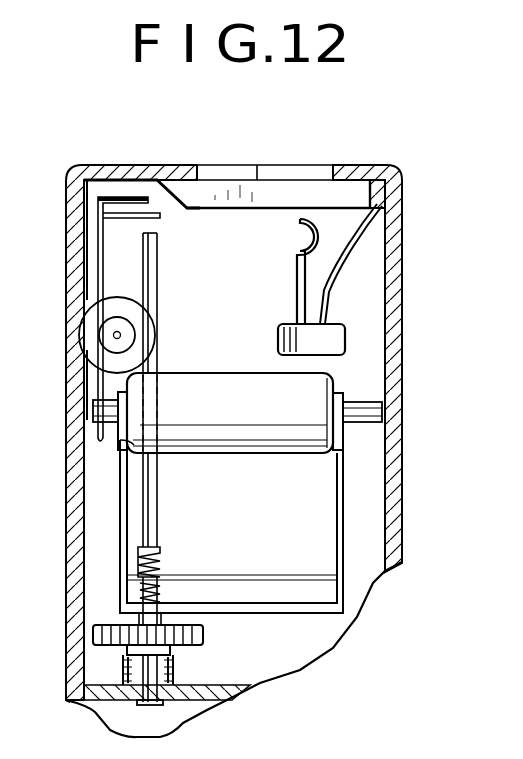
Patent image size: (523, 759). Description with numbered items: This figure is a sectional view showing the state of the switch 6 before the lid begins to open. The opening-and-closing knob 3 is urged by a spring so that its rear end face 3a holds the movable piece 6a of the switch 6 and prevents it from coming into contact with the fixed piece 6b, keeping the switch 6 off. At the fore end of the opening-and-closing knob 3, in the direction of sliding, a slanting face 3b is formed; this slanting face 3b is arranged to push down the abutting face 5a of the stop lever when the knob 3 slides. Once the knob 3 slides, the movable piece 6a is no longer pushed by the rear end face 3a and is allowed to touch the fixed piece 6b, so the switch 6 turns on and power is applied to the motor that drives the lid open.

The opening-and-closing knob 3 is at (270, 193).
The rear end face 3a is at (378, 190).
The slanting face 3b is at (174, 202).
The abutting face 5a is at (125, 195).
The switch 6 is at (330, 340).
The movable piece 6a is at (347, 262).
The fixed piece 6b is at (325, 235).